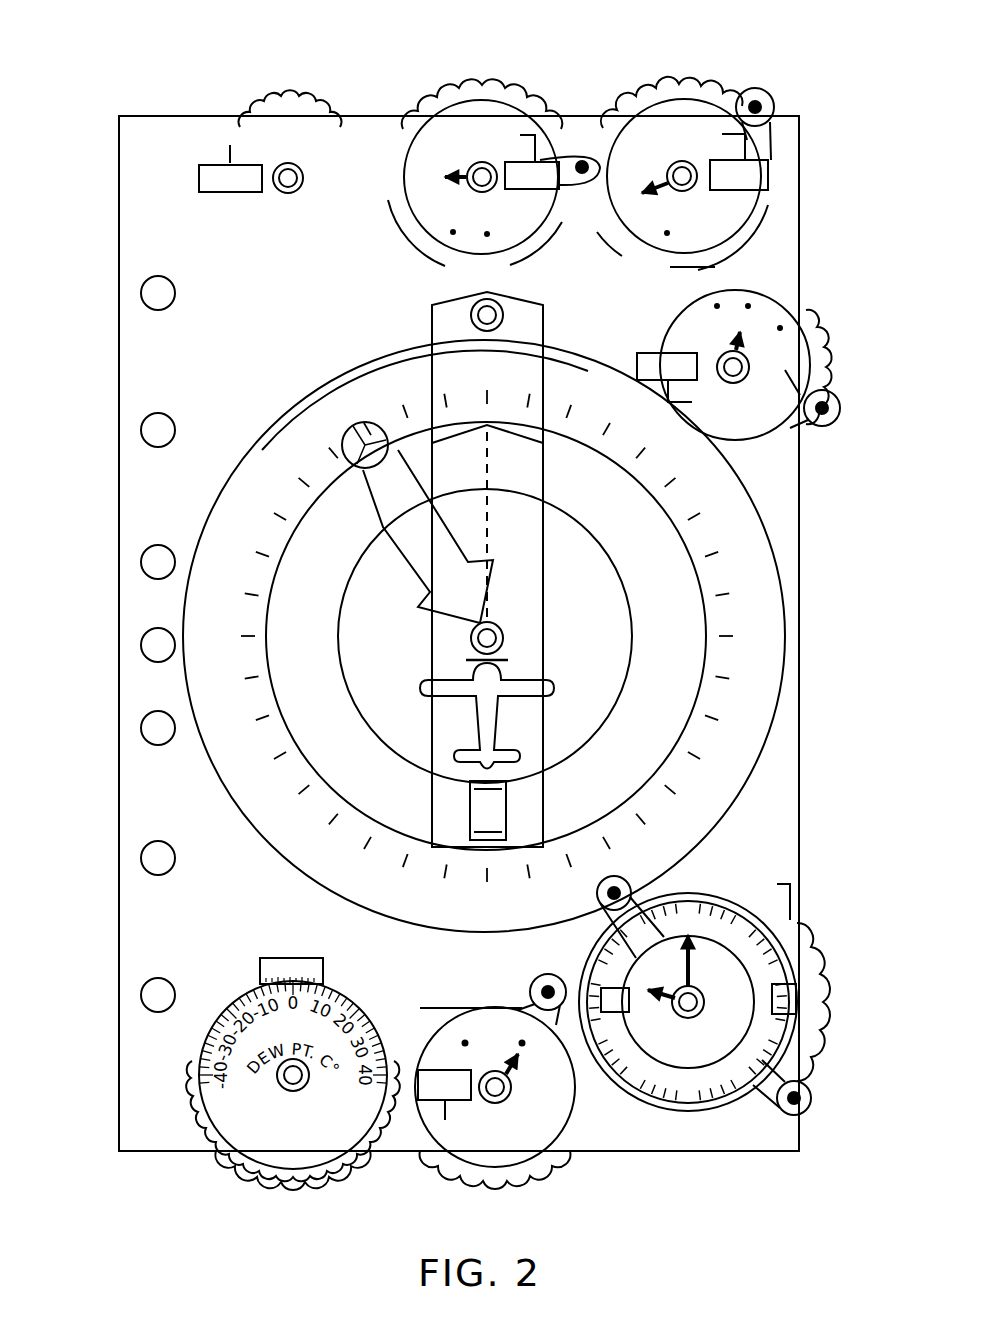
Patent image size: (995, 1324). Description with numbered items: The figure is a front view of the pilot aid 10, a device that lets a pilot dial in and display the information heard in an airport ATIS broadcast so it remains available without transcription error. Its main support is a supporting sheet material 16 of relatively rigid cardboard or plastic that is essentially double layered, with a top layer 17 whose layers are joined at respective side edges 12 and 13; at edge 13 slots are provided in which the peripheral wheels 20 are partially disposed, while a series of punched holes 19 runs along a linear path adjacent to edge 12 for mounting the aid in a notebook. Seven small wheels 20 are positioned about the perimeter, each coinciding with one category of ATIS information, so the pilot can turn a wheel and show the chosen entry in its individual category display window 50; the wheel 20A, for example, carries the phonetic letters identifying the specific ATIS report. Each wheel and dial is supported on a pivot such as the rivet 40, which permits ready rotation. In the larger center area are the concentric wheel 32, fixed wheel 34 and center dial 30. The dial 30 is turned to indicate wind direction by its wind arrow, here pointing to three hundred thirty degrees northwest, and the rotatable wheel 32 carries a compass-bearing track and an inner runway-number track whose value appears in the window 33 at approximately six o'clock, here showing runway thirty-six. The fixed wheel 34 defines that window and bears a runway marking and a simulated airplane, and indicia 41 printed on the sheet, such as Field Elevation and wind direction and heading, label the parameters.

The pilot aid 10 is at (200, 372).
The side edge 12 is at (119, 497).
The side edge 13 is at (803, 480).
The supporting sheet material 16 is at (210, 247).
The top layer 17 is at (785, 250).
The punched holes 19 is at (158, 293).
The wheels 20 is at (300, 110).
The wheel 20A is at (273, 108).
The center dial 30 is at (590, 610).
The wheel 32 is at (747, 703).
The window 33 is at (510, 803).
The fixed wheel 34 is at (310, 690).
The rivet 40 is at (490, 165).
The indicia 41 is at (693, 118).
The display window 50 is at (195, 178).